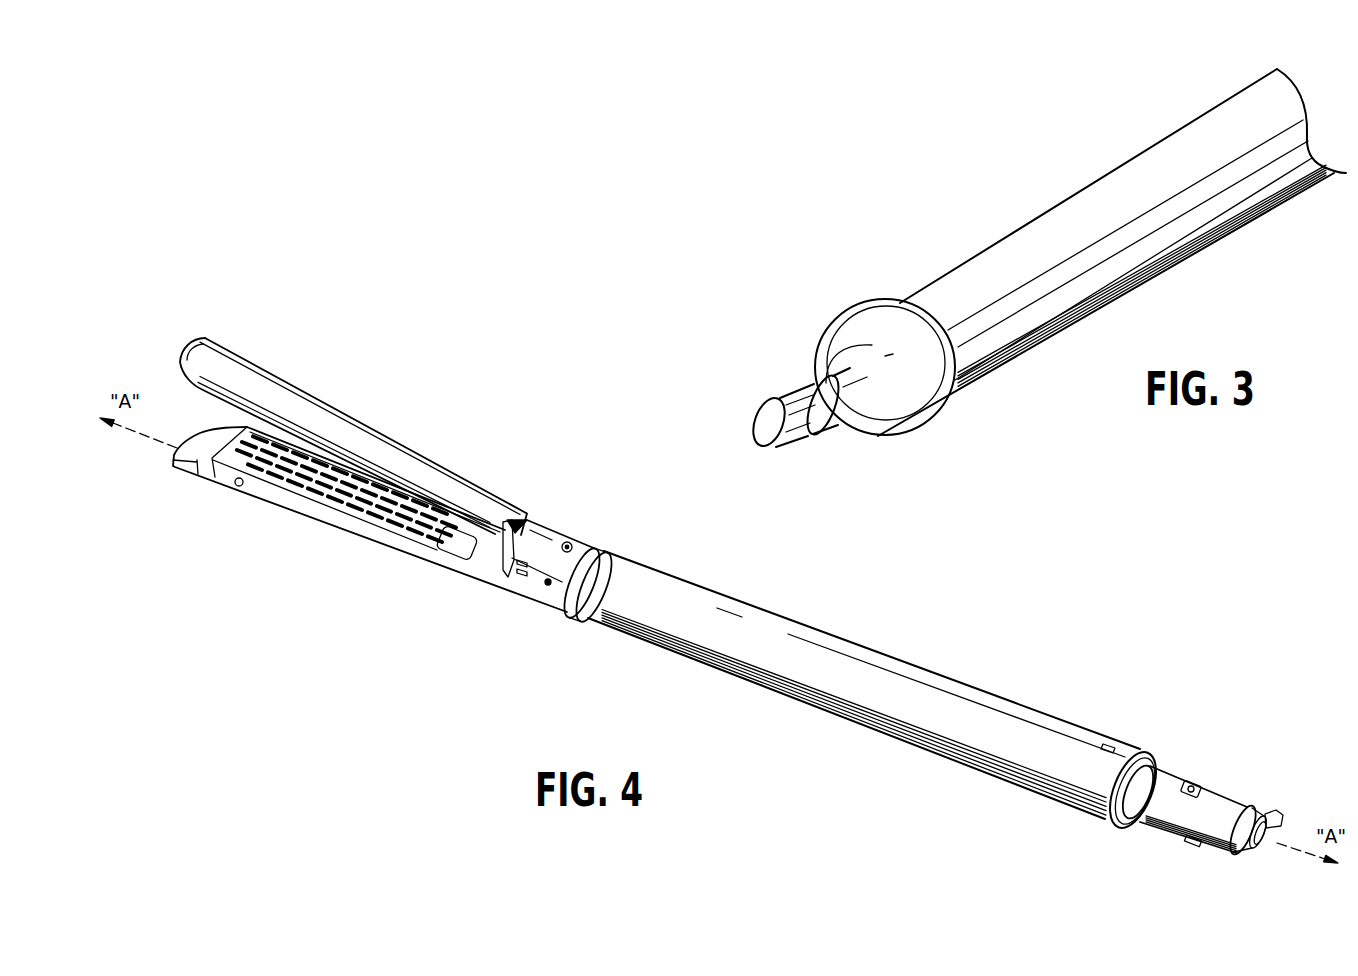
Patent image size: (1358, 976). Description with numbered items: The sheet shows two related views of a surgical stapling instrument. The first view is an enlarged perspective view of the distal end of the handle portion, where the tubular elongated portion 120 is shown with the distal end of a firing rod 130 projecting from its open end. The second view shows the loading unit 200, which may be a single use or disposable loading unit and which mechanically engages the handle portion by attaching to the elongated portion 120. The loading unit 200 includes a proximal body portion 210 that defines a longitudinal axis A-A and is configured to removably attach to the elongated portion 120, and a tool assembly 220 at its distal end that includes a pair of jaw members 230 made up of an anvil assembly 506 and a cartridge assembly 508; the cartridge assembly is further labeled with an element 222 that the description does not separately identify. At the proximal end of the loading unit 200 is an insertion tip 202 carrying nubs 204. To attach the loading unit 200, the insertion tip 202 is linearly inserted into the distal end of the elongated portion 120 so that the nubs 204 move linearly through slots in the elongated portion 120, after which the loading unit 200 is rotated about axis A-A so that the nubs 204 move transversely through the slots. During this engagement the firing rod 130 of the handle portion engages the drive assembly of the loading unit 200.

In FIG. 3, the elongated portion 120 is at (1079, 203).
In FIG. 3, the firing rod 130 is at (781, 365).
In FIG. 4, the loading unit 200 is at (751, 731).
In FIG. 4, the insertion tip 202 is at (1127, 857).
In FIG. 4, the nubs 204 is at (1190, 780).
In FIG. 4, the proximal body portion 210 is at (1020, 705).
In FIG. 4, the tool assembly 220 is at (388, 608).
In FIG. 4, the staple cartridge 222 is at (265, 507).
In FIG. 4, the jaw members 230 is at (344, 373).
In FIG. 4, the anvil assembly 506 is at (373, 457).
In FIG. 4, the cartridge assembly 508 is at (320, 520).